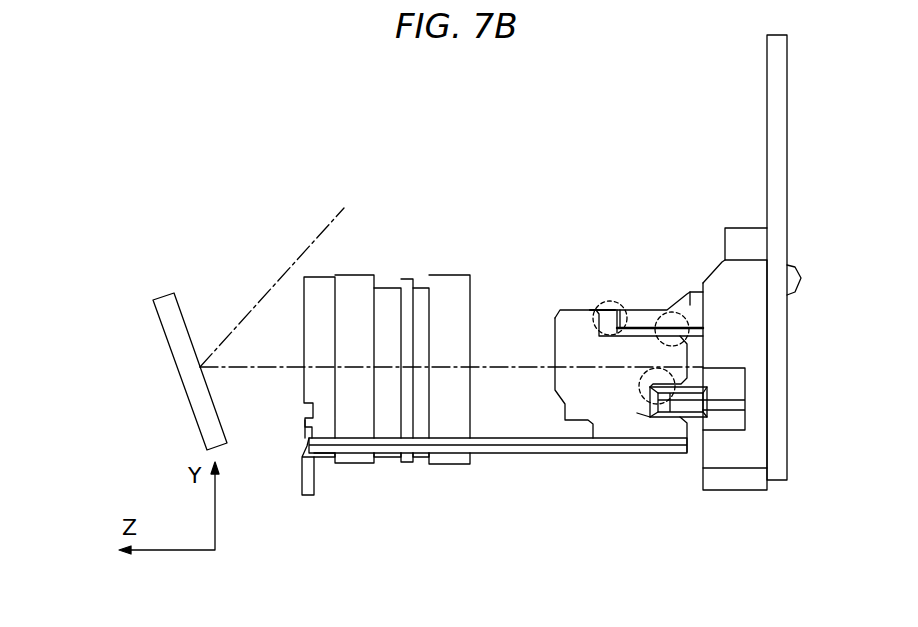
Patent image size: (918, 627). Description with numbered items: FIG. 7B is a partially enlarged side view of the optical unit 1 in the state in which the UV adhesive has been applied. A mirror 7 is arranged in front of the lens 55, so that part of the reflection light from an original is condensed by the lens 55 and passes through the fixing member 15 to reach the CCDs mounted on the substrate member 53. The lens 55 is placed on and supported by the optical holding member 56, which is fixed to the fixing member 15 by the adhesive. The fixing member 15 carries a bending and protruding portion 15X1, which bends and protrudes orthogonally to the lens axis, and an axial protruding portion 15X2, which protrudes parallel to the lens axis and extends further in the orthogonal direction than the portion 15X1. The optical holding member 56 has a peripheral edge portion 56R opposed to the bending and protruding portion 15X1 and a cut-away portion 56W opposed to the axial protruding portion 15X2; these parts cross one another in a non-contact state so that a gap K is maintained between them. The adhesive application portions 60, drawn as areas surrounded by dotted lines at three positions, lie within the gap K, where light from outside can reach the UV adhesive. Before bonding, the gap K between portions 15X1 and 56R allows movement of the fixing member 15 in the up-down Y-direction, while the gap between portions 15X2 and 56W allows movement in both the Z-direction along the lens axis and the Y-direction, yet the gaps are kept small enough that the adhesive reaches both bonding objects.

The optical unit 1 is at (479, 472).
The mirror 7 is at (175, 342).
The fixing member 15 is at (732, 383).
The bending and protruding portion 15X1 is at (645, 317).
The axial protruding portion 15X2 is at (680, 407).
The substrate member 53 is at (770, 165).
The lens 55 is at (355, 285).
The optical holding member 56 is at (545, 320).
The peripheral edge portion 56R is at (672, 300).
The cut-away portion 56W is at (648, 416).
The adhesive application portion 60 is at (612, 302).
The gap K is at (693, 362).